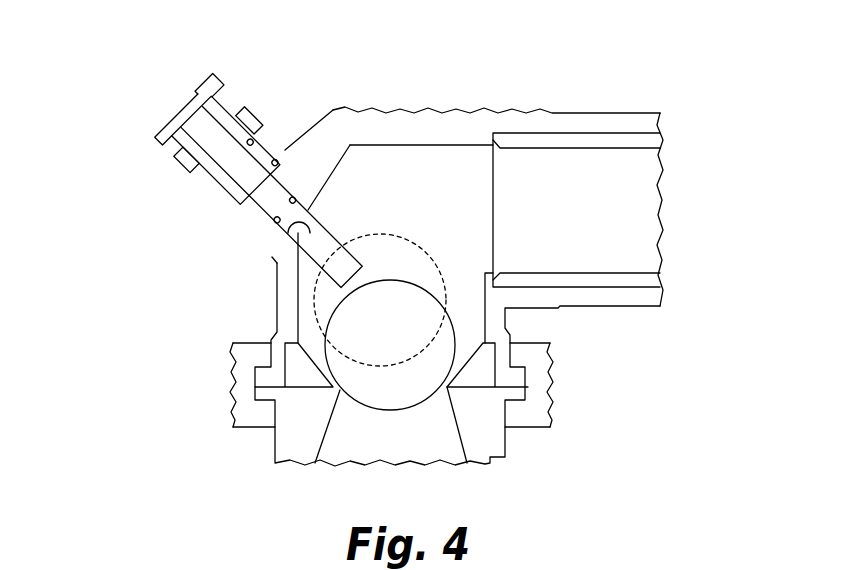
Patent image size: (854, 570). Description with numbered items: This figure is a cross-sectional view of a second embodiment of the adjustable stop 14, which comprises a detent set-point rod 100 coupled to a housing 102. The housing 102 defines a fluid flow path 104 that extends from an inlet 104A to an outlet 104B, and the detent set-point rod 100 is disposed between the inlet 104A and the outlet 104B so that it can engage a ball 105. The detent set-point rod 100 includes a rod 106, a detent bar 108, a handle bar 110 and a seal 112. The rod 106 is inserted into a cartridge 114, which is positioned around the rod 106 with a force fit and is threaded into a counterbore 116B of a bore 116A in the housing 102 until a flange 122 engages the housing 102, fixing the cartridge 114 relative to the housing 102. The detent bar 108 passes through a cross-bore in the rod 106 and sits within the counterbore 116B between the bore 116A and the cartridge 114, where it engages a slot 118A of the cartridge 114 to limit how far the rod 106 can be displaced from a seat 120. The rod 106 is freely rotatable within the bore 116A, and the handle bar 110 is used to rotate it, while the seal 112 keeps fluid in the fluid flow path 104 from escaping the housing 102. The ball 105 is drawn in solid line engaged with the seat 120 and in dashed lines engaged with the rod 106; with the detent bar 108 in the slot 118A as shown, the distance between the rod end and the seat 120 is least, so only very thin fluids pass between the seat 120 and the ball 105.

The adjustable stop 14 is at (130, 122).
The detent set-point rod 100 is at (160, 163).
The housing 102 is at (288, 316).
The fluid flow path 104 is at (430, 209).
The inlet 104A is at (396, 438).
The outlet 104B is at (612, 208).
The ball 105 is at (406, 347).
The rod 106 is at (273, 258).
The detent bar 108 is at (247, 200).
The handle bar 110 is at (210, 86).
The seal 112 is at (272, 225).
The cartridge 114 is at (217, 178).
The bore 116A is at (266, 215).
The counterbore 116B is at (246, 133).
The slot 118A is at (279, 166).
The seat 120 is at (482, 368).
The flange 122 is at (234, 112).